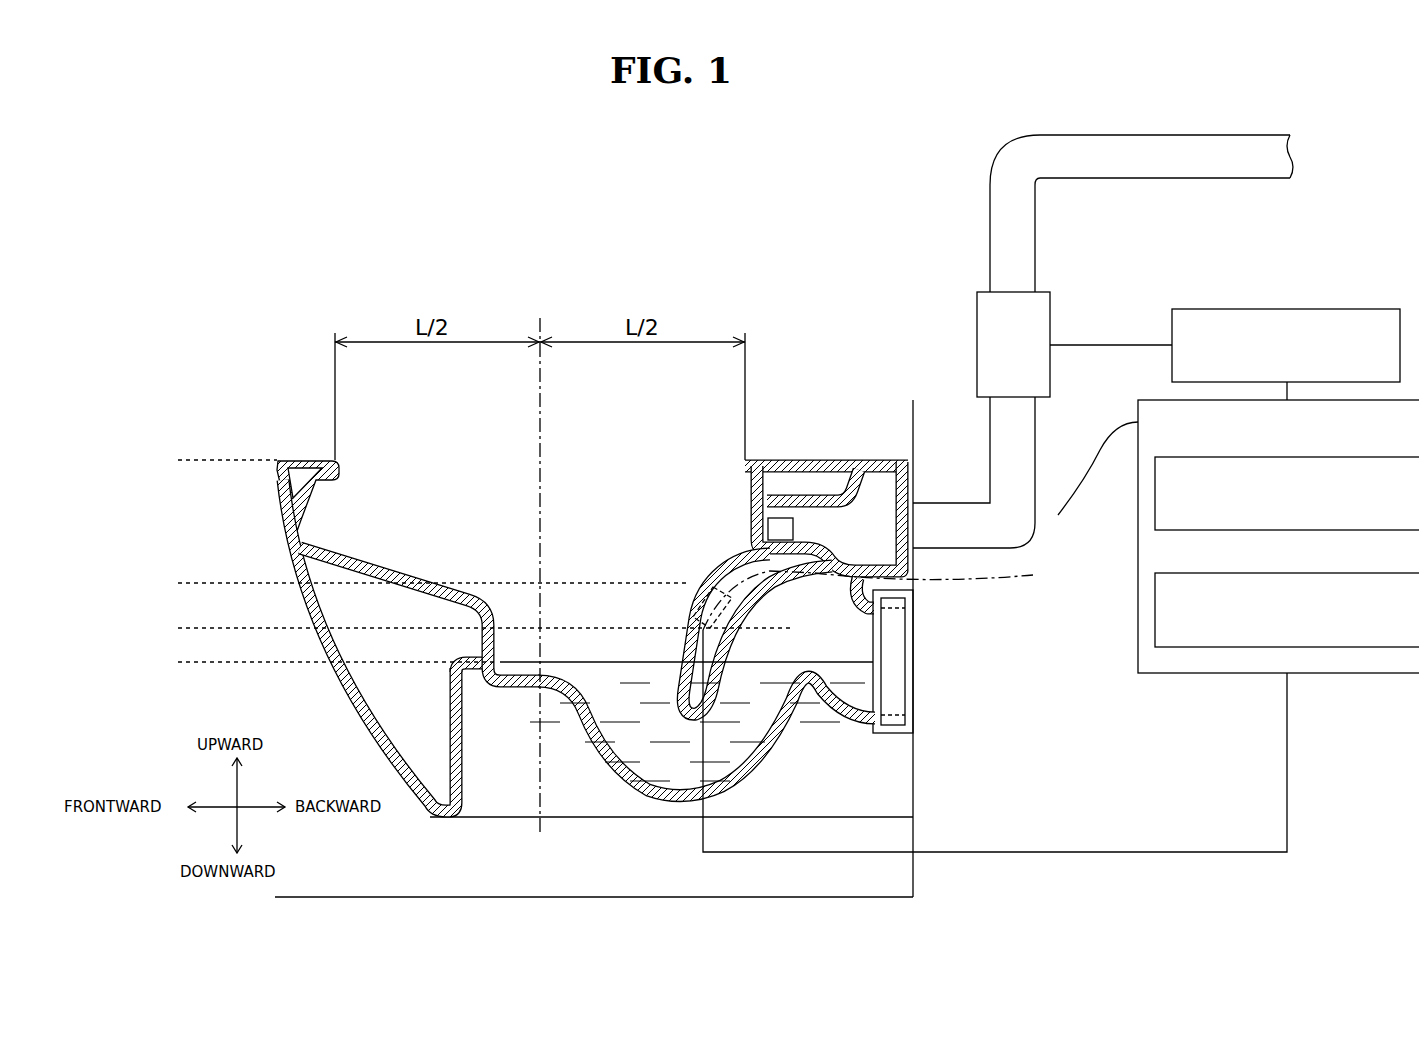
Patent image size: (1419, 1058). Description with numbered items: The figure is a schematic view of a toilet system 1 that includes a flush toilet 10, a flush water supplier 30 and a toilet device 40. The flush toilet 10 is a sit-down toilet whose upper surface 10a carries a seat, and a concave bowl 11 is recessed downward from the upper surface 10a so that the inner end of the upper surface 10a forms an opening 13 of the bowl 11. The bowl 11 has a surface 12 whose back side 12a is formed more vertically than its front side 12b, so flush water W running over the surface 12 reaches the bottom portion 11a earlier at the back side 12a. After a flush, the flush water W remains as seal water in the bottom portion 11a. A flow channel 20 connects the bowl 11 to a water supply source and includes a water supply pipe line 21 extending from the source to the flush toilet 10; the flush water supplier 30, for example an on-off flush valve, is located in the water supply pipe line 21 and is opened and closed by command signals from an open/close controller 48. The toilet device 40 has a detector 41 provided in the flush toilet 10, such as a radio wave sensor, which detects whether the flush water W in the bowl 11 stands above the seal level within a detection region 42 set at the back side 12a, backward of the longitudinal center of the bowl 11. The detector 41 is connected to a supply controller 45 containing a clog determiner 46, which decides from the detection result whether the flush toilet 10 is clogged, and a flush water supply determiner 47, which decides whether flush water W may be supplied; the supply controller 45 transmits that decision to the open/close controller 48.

The toilet system 1 is at (873, 148).
The flush toilet 10 is at (806, 449).
The upper surface 10a is at (305, 456).
The bowl 11 is at (398, 573).
The bottom portion 11a is at (643, 800).
The surface 12 is at (427, 580).
The back side 12a is at (712, 560).
The front side 12b is at (377, 567).
The opening 13 is at (745, 470).
The flow channel 20 is at (1093, 133).
The water supply pipe line 21 is at (1008, 230).
The flush water supplier 30 is at (977, 328).
The toilet device 40 is at (1072, 515).
The detector 41 is at (884, 597).
The detection region 42 is at (690, 585).
The supply controller 45 is at (1087, 485).
The clog determiner 46 is at (1365, 573).
The flush water supply determiner 47 is at (1365, 457).
The open/close controller 48 is at (1370, 309).
The flush water W is at (745, 752).